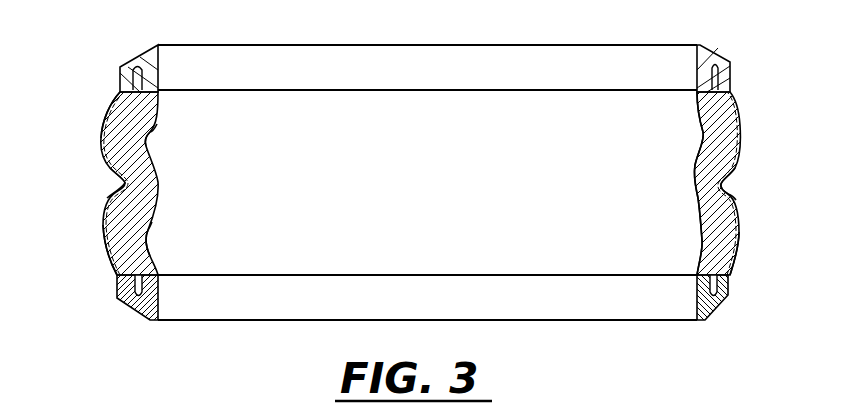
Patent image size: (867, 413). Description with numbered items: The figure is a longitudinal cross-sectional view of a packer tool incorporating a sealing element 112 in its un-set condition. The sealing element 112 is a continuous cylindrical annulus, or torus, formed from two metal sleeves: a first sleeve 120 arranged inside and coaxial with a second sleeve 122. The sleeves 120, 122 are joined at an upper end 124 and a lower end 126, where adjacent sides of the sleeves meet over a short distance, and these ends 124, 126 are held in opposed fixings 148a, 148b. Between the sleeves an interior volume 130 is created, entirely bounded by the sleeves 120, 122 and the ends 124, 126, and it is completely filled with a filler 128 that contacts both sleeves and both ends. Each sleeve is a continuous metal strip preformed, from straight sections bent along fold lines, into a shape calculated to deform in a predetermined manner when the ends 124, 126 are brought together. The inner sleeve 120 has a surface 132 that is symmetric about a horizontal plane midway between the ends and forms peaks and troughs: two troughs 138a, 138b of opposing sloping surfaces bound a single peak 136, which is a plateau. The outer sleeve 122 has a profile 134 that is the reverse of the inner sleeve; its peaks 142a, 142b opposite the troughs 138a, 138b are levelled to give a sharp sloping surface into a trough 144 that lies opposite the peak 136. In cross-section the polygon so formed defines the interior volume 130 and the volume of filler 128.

The sealing element 112 is at (737, 98).
The first sleeve 120 is at (697, 190).
The second sleeve 122 is at (738, 218).
The upper end 124 is at (715, 62).
The lower end 126 is at (728, 287).
The filler 128 is at (730, 148).
The interior volume 130 is at (705, 110).
The surface 132 is at (697, 253).
The profile 134 is at (735, 245).
The peak 136 is at (160, 188).
The trough 138a is at (147, 138).
The trough 138b is at (148, 240).
The peak 142a is at (101, 142).
The peak 142b is at (100, 224).
The trough 144 is at (123, 185).
The fixing 148a is at (140, 60).
The fixing 148b is at (141, 318).